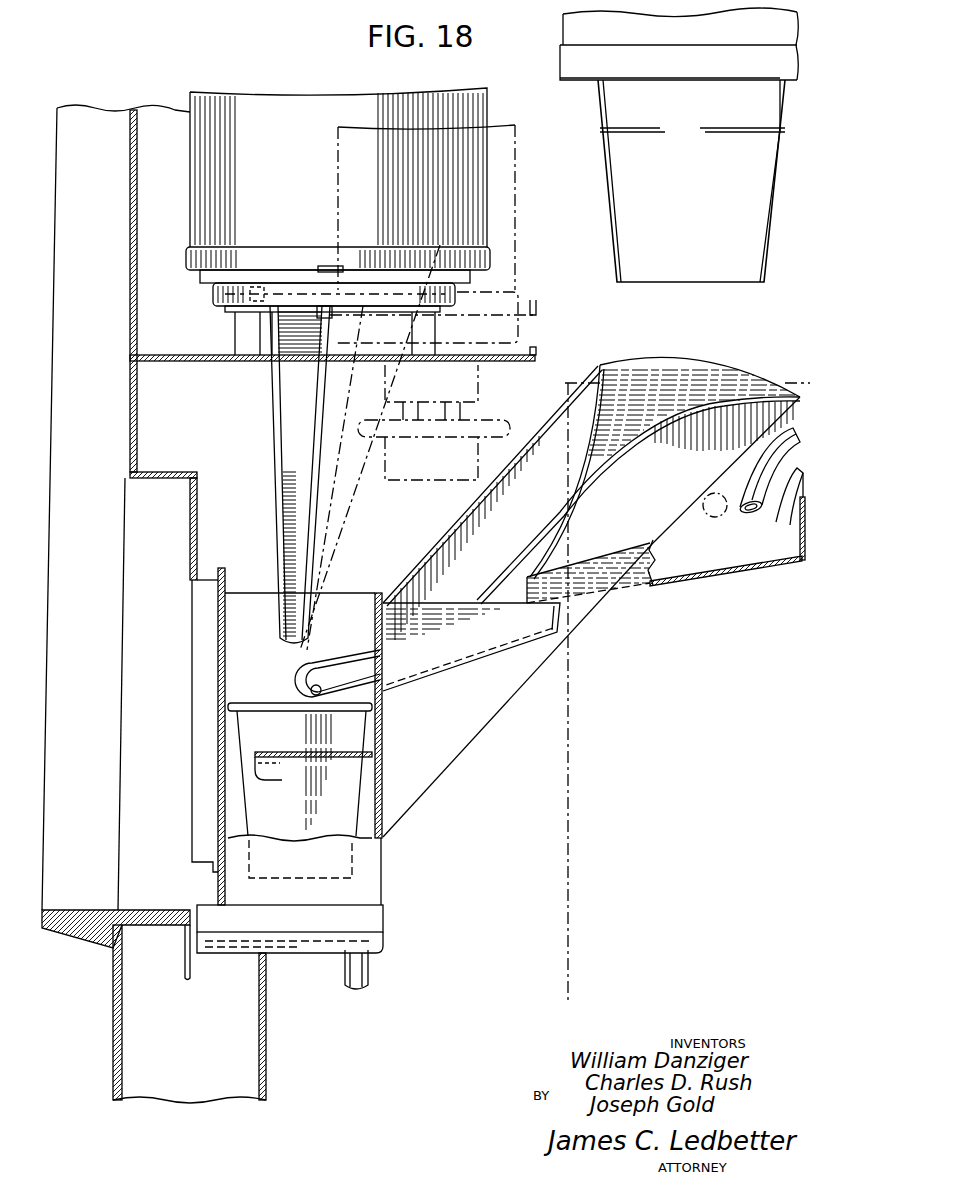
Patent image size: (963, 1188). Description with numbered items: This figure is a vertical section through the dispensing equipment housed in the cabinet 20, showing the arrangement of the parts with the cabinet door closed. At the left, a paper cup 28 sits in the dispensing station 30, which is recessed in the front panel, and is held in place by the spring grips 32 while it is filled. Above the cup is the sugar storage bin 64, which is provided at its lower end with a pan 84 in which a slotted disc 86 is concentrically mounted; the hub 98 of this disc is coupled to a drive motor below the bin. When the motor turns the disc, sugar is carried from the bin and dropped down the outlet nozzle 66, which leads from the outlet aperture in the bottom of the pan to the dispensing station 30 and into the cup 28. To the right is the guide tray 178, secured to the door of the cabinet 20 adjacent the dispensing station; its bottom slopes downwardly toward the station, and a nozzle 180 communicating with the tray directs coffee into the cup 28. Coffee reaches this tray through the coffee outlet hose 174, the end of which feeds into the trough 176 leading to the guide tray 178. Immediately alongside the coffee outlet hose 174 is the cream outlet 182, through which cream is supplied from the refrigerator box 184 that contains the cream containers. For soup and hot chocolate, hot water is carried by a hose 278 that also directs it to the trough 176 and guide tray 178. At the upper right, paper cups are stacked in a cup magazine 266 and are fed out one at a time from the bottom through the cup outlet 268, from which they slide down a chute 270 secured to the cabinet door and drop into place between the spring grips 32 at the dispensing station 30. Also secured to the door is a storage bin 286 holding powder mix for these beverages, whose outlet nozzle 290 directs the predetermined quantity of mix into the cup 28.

The cabinet 20 is at (79, 963).
The paper cup 28 is at (265, 718).
The dispensing station 30 is at (214, 781).
The spring grips 32 is at (278, 757).
The sugar storage bin 64 is at (249, 90).
The outlet nozzle 66 is at (288, 418).
The pan 84 is at (215, 294).
The slotted disc 86 is at (258, 287).
The hub 98 is at (330, 268).
The coffee outlet hose 174 is at (782, 498).
The trough 176 is at (697, 577).
The guide tray 178 is at (448, 648).
The nozzle 180 is at (333, 672).
The cream outlet 182 is at (703, 510).
The refrigerator box 184 is at (568, 746).
The cup magazine 266 is at (559, 47).
The cup outlet 268 is at (630, 200).
The chute 270 is at (677, 372).
The hose 278 is at (760, 476).
The storage bin 286 is at (518, 192).
The outlet nozzle 290 is at (362, 484).